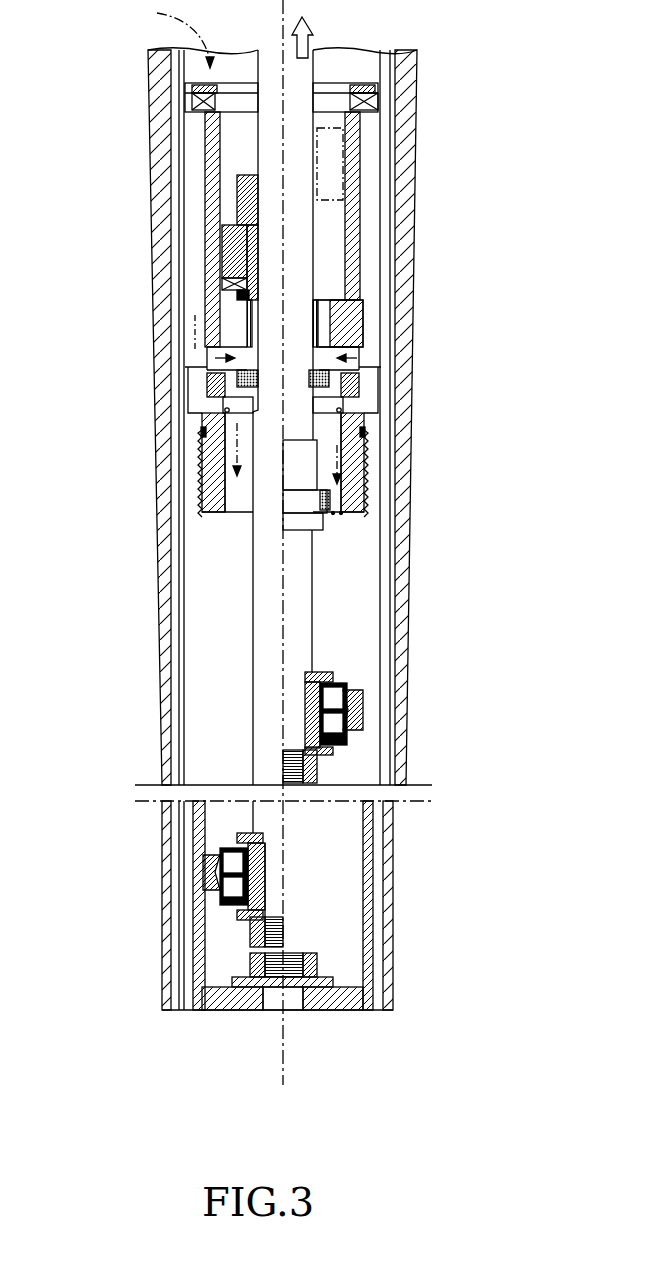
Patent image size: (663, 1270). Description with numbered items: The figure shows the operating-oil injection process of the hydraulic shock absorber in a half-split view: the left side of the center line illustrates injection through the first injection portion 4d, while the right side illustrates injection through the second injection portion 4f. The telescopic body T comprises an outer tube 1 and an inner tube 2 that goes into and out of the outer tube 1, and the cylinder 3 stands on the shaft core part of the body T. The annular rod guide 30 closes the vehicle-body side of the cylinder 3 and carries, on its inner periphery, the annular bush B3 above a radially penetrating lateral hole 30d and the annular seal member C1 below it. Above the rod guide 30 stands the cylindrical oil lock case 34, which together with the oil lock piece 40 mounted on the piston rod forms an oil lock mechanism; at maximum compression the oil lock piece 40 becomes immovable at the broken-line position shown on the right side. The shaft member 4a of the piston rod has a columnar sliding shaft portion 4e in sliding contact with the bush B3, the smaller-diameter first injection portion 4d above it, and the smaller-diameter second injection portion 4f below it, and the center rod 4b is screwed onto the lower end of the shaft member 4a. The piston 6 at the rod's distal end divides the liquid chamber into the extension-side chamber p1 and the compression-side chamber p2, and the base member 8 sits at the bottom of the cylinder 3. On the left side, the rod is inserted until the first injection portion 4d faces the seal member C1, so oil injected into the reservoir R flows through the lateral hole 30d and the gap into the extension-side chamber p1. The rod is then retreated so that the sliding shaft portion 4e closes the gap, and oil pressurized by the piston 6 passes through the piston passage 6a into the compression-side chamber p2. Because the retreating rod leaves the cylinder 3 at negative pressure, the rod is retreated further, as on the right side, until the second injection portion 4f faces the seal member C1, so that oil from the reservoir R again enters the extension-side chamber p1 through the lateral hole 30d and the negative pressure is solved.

The body T is at (145, 101).
The outer tube 1 is at (403, 688).
The inner tube 2 is at (392, 938).
The cylinder 3 is at (192, 830).
The oil lock case 34 is at (210, 185).
The oil lock piece 40 is at (220, 248).
The reservoir R is at (193, 278).
The first injection portion 4d is at (245, 337).
The seal member C1 is at (192, 380).
The rod guide 30 is at (210, 468).
The lateral hole 30d is at (380, 355).
The sliding shaft portion 4e is at (255, 552).
The second injection portion 4f is at (365, 411).
The bush B3 is at (362, 306).
The shaft member 4a is at (245, 602).
The center rod 4b is at (297, 604).
The piston 6 is at (192, 900).
The piston passage 6a is at (208, 870).
The base member 8 is at (240, 1010).
The extension-side chamber p1 is at (222, 703).
The compression-side chamber p2 is at (212, 963).